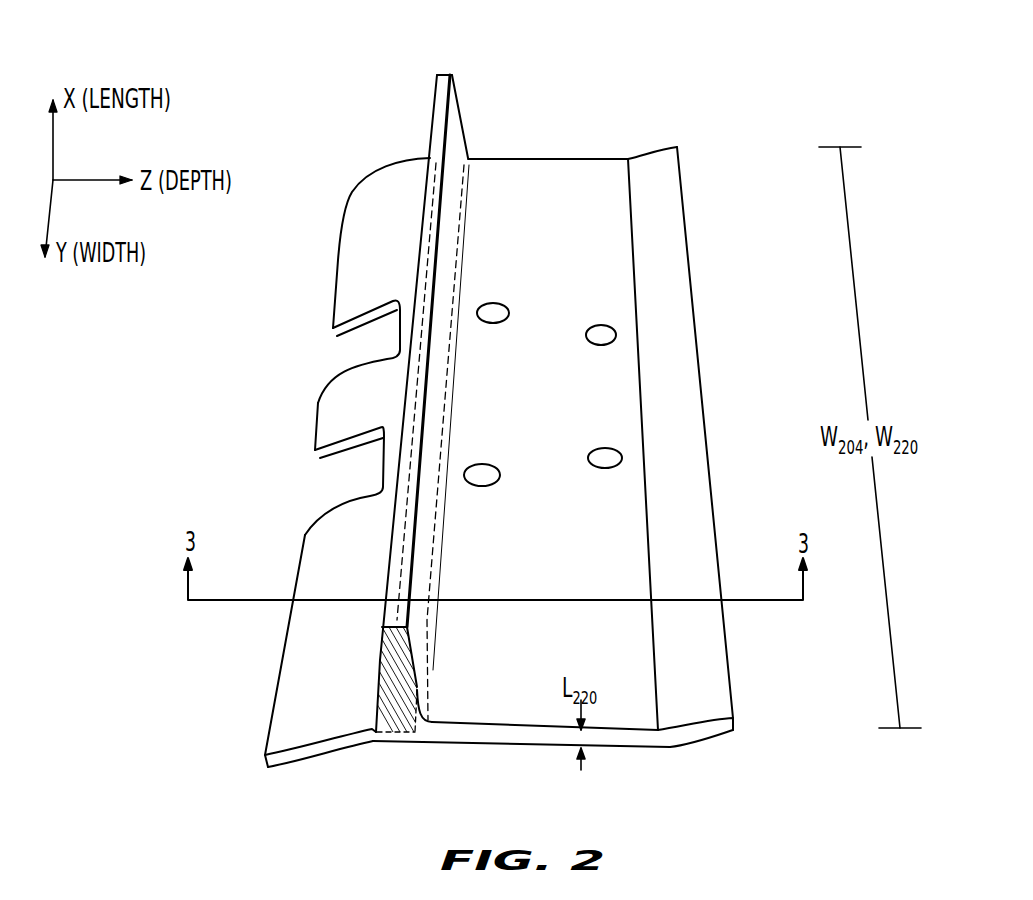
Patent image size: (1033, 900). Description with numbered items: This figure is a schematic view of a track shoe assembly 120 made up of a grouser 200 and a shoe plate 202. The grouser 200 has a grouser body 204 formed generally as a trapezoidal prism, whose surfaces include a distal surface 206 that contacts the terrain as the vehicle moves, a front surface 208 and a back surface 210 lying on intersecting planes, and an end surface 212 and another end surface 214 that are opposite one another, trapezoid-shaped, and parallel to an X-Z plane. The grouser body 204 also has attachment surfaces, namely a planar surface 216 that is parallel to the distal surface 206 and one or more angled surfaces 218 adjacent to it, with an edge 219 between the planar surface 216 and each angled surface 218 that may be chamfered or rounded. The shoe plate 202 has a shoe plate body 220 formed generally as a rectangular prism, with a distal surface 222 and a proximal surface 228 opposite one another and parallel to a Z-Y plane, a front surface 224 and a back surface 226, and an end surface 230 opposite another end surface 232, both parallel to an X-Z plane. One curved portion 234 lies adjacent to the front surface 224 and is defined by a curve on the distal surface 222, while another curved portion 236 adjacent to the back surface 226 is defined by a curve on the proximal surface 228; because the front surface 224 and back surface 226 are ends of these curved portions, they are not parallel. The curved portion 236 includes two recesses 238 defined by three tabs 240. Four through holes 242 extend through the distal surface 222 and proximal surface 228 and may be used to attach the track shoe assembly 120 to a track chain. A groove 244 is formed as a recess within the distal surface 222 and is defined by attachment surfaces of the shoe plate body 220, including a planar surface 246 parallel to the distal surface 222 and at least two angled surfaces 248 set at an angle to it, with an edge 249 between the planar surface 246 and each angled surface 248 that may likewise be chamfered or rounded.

The track shoe assembly 120 is at (703, 135).
The grouser 200 is at (430, 113).
The shoe plate 202 is at (562, 147).
The grouser body 204 is at (424, 103).
The distal surface 206 is at (446, 73).
The front surface 208 is at (455, 138).
The back surface 210 is at (379, 656).
The end surface 212 is at (407, 683).
The another end surface 214 is at (458, 108).
The planar surface 216 is at (398, 738).
The angled surfaces 218 is at (372, 728).
The edge 219 is at (373, 722).
The shoe plate body 220 is at (642, 725).
The distal surface 222 is at (643, 682).
The front surface 224 is at (714, 517).
The back surface 226 is at (280, 676).
The proximal surface 228 is at (515, 747).
The end surface 230 is at (708, 733).
The another end surface 232 is at (612, 158).
The curved portion 234 is at (684, 347).
The another curved portion 236 is at (342, 272).
The recesses 238 is at (343, 347).
The tabs 240 is at (358, 199).
The through holes 242 is at (600, 325).
The groove 244 is at (441, 542).
The planar surface 246 is at (417, 569).
The angled surfaces 248 is at (437, 516).
The edge 249 is at (383, 683).